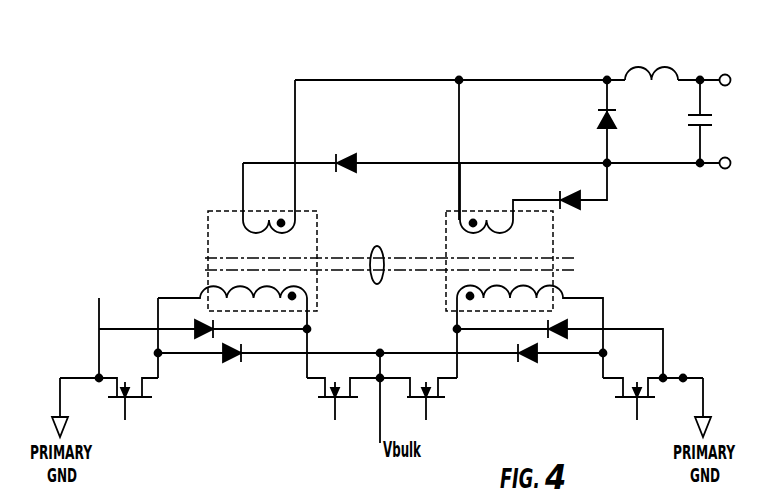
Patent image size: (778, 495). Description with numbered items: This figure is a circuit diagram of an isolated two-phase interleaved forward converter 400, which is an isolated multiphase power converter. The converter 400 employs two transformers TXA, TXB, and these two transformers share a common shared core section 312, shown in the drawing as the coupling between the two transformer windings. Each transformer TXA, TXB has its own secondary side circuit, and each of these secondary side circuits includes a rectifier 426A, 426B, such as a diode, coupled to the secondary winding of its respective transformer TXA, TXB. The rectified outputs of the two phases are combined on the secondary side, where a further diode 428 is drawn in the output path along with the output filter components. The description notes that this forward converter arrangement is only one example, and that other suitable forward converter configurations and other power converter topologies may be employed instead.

The isolated two-phase interleaved forward converter 400 is at (445, 52).
The output diode 428 is at (598, 126).
The rectifier 426A is at (347, 156).
The rectifier 426B is at (560, 163).
The shared core section 312 is at (381, 247).
The transformer TXA is at (208, 242).
The transformer TXB is at (553, 239).